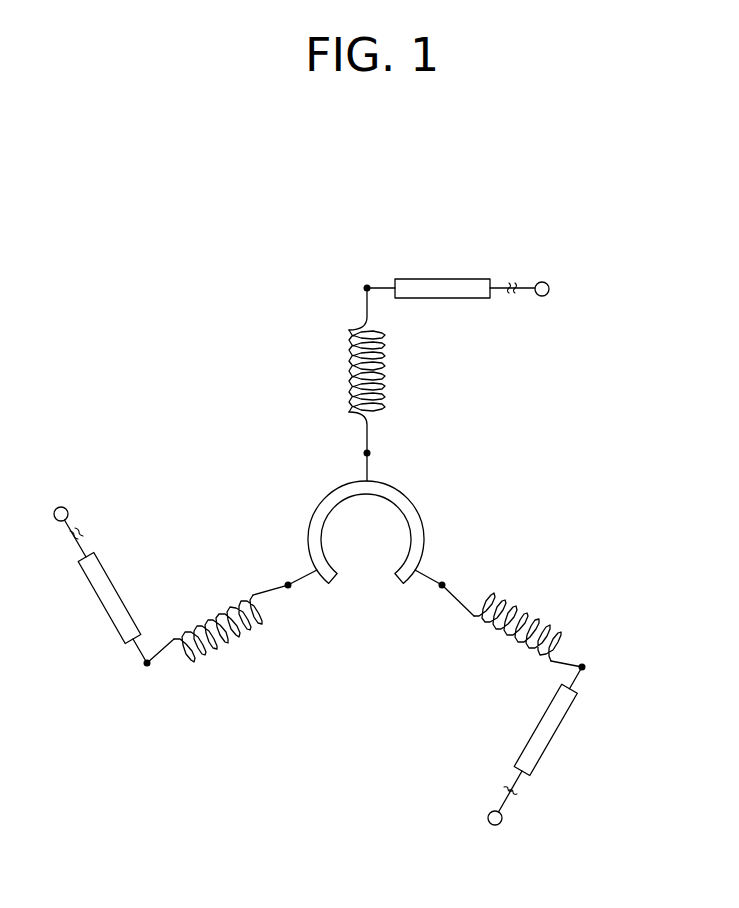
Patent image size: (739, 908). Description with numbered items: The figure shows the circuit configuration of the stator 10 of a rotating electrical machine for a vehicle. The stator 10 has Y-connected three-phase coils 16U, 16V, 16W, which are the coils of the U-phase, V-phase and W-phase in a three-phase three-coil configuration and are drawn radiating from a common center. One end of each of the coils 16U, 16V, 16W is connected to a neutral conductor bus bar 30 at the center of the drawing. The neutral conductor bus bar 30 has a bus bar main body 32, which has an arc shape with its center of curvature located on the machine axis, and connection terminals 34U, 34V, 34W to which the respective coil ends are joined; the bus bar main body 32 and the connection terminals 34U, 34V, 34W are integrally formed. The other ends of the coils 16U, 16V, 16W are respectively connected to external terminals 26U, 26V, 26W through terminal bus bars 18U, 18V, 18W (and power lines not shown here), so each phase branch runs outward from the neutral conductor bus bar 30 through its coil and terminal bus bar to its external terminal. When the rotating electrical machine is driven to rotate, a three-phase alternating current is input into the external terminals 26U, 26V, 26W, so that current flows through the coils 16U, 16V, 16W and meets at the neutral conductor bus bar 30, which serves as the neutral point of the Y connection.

The stator 10 is at (158, 208).
The U-phase coil 16U is at (383, 352).
The V-phase coil 16V is at (197, 623).
The W-phase coil 16W is at (538, 622).
The terminal bus bar 18U is at (442, 287).
The terminal bus bar 18V is at (110, 605).
The terminal bus bar 18W is at (545, 732).
The external terminal 26U is at (552, 290).
The external terminal 26V is at (61, 507).
The external terminal 26W is at (495, 826).
The neutral conductor bus bar 30 is at (368, 528).
The bus bar main body 32 is at (312, 532).
The connection terminal 34U is at (362, 468).
The connection terminal 34V is at (302, 582).
The connection terminal 34W is at (427, 582).